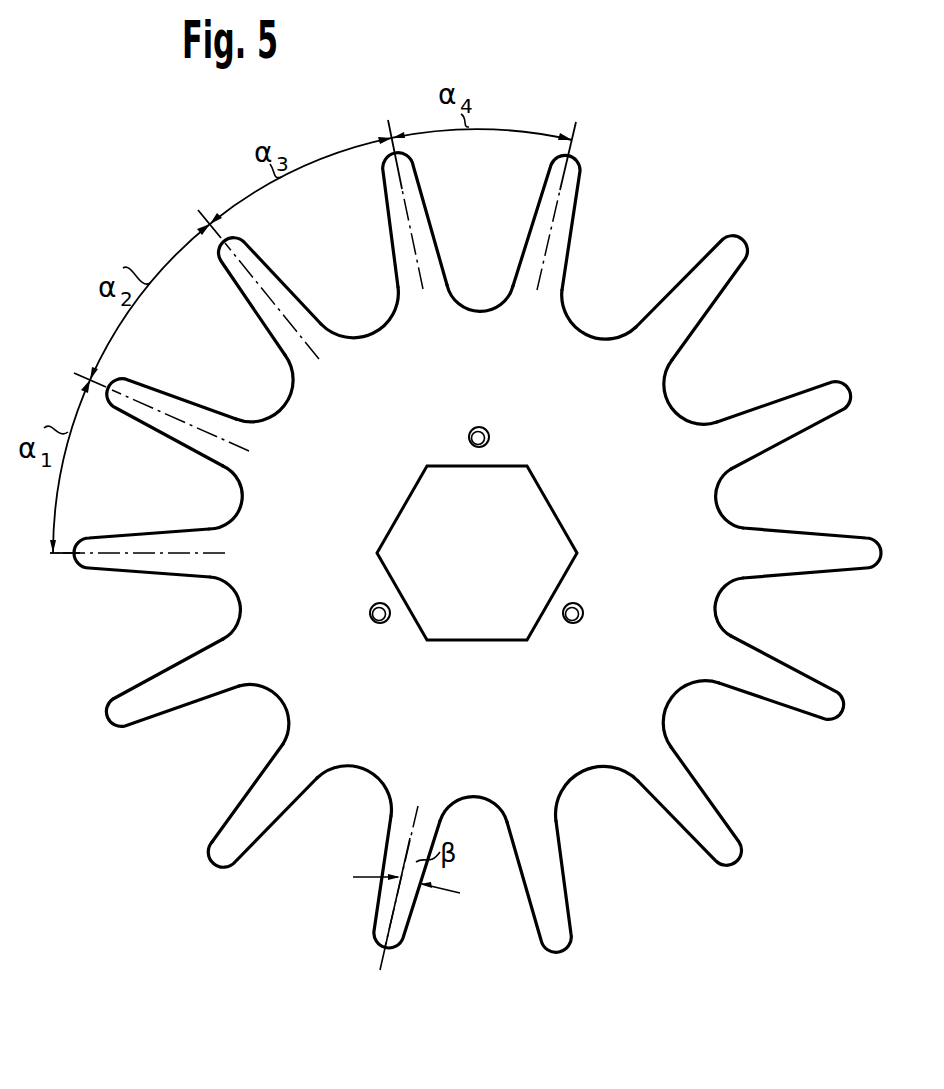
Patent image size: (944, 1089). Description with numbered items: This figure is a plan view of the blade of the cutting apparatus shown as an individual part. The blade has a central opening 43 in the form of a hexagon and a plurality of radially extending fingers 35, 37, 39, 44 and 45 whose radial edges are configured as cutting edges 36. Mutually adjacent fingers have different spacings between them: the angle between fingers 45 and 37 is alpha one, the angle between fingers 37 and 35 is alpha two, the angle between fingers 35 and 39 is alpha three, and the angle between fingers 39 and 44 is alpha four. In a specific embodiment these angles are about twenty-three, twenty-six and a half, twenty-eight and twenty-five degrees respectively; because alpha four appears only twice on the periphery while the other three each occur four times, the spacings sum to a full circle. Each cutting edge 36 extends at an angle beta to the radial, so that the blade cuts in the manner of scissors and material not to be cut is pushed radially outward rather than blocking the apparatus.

The finger 35 is at (243, 246).
The cutting edge 36 is at (143, 680).
The finger 37 is at (135, 390).
The finger 39 is at (407, 184).
The central opening 43 is at (550, 505).
The finger 44 is at (567, 184).
The finger 45 is at (842, 543).